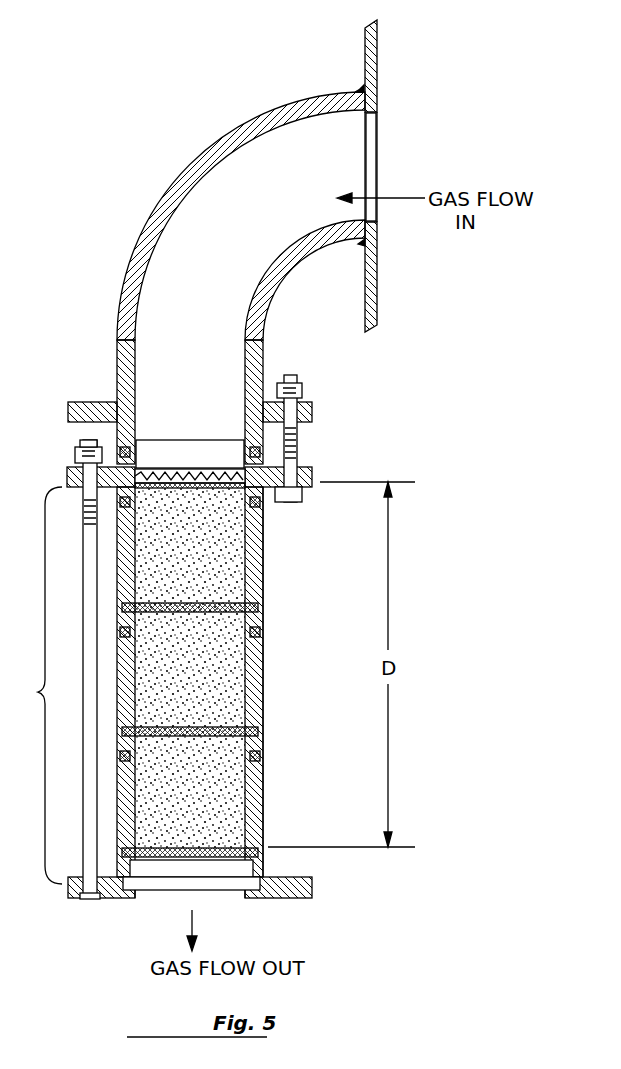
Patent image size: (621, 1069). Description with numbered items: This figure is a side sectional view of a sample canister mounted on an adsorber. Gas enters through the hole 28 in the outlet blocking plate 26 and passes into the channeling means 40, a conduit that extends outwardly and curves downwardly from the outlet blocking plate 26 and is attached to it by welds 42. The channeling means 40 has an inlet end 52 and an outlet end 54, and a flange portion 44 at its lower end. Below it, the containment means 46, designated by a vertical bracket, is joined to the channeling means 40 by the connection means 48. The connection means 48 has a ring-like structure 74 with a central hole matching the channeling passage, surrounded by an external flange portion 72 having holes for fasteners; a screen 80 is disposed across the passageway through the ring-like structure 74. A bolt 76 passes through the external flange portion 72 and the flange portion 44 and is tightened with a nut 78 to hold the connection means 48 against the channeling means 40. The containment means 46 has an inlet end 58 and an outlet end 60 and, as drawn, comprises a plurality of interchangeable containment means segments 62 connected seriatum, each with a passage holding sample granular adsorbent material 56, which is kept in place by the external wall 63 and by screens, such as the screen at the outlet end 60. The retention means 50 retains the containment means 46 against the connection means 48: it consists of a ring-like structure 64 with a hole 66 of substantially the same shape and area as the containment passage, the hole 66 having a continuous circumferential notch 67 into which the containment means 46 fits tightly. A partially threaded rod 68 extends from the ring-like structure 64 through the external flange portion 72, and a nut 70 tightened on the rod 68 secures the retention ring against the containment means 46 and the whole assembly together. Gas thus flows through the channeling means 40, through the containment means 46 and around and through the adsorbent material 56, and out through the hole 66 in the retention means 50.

The outlet blocking plate 26 is at (363, 46).
The hole 28 is at (378, 142).
The channeling means 40 is at (168, 188).
The welds 42 is at (362, 91).
The flange portion 44 is at (103, 402).
The containment means 46 is at (138, 685).
The connection means 48 is at (326, 463).
The retention means 50 is at (71, 908).
The inlet end 52 is at (382, 161).
The outlet end 54 is at (190, 455).
The sample granular adsorbent material 56 is at (216, 682).
The inlet end 58 is at (211, 489).
The outlet end 60 is at (217, 848).
The containment means segments 62 is at (263, 585).
The external wall 63 is at (259, 560).
The ring-like structure 64 is at (118, 900).
The hole 66 is at (217, 901).
The circumferential notch 67 is at (143, 890).
The partially threaded rod 68 is at (92, 583).
The nut 70 is at (75, 453).
The external flange portion 72 is at (67, 477).
The ring-like structure 74 is at (117, 456).
The bolt 76 is at (291, 447).
The nut 78 is at (291, 392).
The screen 80 is at (160, 469).